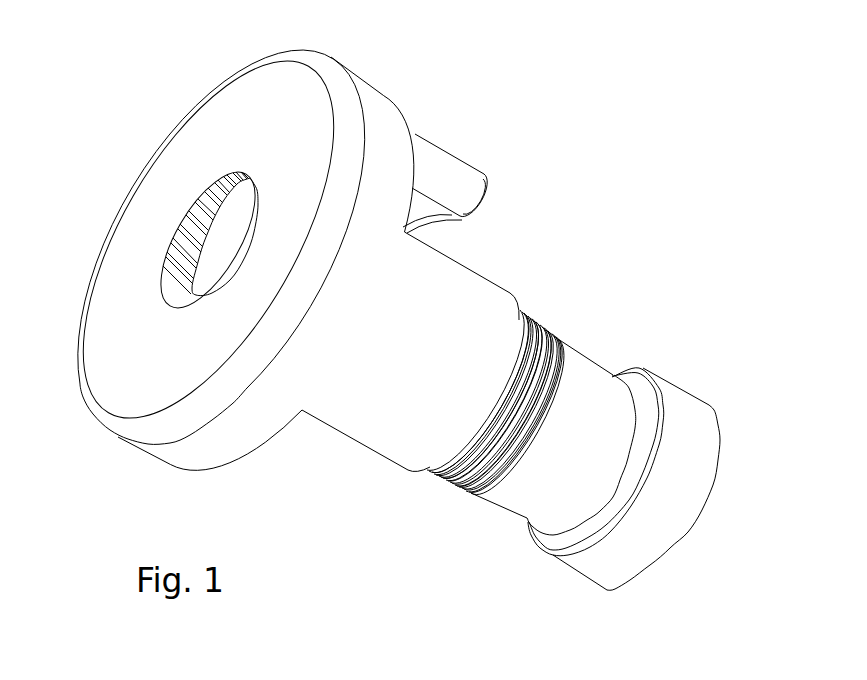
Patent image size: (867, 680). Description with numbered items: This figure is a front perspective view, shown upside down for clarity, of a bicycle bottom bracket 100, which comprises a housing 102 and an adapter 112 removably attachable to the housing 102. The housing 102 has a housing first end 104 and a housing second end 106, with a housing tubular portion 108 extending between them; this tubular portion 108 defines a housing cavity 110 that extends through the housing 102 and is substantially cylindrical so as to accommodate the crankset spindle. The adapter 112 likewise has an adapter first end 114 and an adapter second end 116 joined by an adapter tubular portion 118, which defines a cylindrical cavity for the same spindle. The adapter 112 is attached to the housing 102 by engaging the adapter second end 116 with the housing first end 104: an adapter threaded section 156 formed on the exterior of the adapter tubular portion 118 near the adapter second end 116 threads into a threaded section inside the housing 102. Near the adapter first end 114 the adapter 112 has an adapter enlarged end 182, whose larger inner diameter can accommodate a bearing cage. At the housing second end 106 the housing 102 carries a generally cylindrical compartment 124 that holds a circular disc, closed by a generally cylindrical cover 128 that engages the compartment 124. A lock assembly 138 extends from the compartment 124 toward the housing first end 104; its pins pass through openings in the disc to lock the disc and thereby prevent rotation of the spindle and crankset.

The bottom bracket 100 is at (406, 339).
The housing 102 is at (266, 259).
The housing first end 104 is at (523, 278).
The housing second end 106 is at (78, 413).
The housing tubular portion 108 is at (430, 353).
The housing cavity 110 is at (229, 253).
The adapter 112 is at (629, 473).
The adapter first end 114 is at (666, 507).
The adapter second end 116 is at (423, 490).
The adapter tubular portion 118 is at (535, 490).
The compartment 124 is at (212, 437).
The cover 128 is at (222, 127).
The lock assembly 138 is at (444, 162).
The adapter threaded section 156 is at (536, 338).
The adapter enlarged end 182 is at (693, 418).